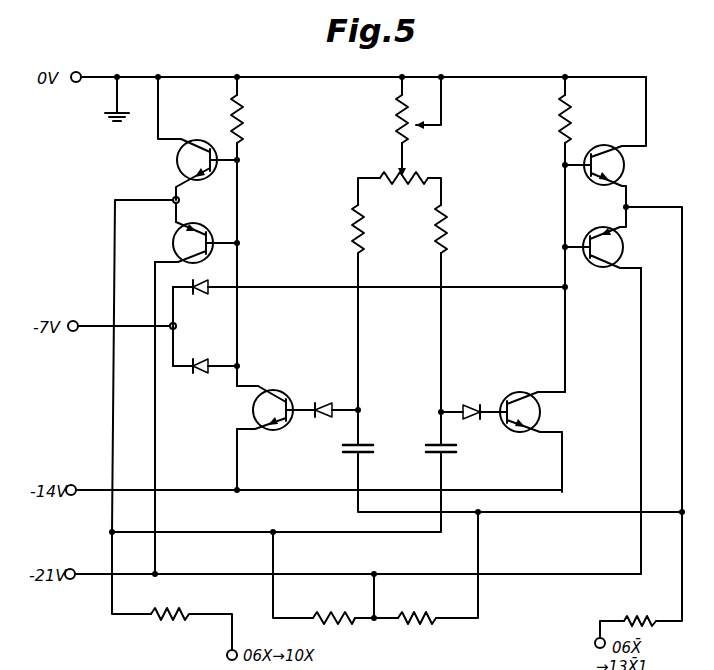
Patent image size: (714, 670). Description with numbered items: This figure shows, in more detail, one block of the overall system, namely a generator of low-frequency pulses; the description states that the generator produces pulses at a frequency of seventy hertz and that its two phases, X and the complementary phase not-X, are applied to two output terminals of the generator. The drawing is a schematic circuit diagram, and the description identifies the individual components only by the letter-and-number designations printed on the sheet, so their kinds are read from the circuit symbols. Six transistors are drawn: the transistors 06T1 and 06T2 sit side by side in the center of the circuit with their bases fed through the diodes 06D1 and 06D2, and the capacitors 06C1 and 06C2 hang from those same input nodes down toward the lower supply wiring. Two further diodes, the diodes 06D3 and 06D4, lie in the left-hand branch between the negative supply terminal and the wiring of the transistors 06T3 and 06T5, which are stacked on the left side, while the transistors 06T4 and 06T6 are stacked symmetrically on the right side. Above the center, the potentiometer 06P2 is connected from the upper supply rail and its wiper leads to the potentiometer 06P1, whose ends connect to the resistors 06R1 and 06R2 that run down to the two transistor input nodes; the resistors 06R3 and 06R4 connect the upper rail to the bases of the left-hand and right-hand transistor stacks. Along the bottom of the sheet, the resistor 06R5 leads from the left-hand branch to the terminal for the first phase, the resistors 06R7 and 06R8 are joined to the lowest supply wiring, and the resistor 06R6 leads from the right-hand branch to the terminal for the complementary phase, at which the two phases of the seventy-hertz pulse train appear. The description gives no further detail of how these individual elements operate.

The resistor 06R1 is at (352, 230).
The resistor 06R2 is at (446, 236).
The resistor 06R3 is at (259, 119).
The resistor 06R4 is at (559, 125).
The resistor 06R5 is at (190, 602).
The resistor 06R6 is at (657, 609).
The resistor 06R7 is at (355, 604).
The resistor 06R8 is at (444, 604).
The potentiometer 06P1 is at (425, 184).
The potentiometer 06P2 is at (398, 113).
The capacitor 06C1 is at (346, 456).
The capacitor 06C2 is at (452, 450).
The diode 06D1 is at (336, 394).
The diode 06D2 is at (462, 405).
The diode 06D3 is at (216, 350).
The diode 06D4 is at (206, 292).
The transistor 06T1 is at (253, 410).
The transistor 06T2 is at (538, 428).
The transistor 06T3 is at (175, 158).
The transistor 06T4 is at (625, 175).
The transistor 06T5 is at (183, 230).
The transistor 06T6 is at (624, 251).